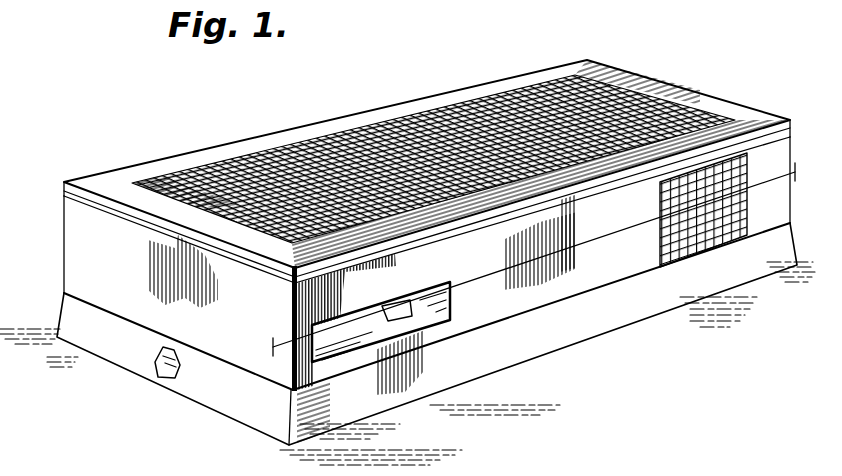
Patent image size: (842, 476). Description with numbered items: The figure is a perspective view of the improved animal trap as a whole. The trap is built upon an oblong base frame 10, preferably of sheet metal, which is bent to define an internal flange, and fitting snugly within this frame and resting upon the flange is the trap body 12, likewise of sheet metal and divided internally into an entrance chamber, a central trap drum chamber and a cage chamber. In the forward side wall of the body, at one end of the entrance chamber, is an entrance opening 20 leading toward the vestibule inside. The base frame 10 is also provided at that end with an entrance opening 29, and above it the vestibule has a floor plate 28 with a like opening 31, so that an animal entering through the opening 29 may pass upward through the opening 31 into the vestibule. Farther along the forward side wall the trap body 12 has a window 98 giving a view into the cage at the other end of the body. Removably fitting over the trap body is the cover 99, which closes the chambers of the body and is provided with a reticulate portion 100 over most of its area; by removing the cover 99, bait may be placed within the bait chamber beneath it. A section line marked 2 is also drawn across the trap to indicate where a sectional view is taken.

The cover 99 is at (688, 98).
The reticulate portion 100 is at (592, 90).
The trap body 12 is at (427, 266).
The base frame 10 is at (427, 334).
The window 98 is at (700, 238).
The entrance opening 20 is at (434, 326).
The floor plate 28 is at (381, 326).
The opening 31 is at (397, 322).
The entrance opening 29 is at (170, 380).
The section line 2- 2 is at (531, 261).